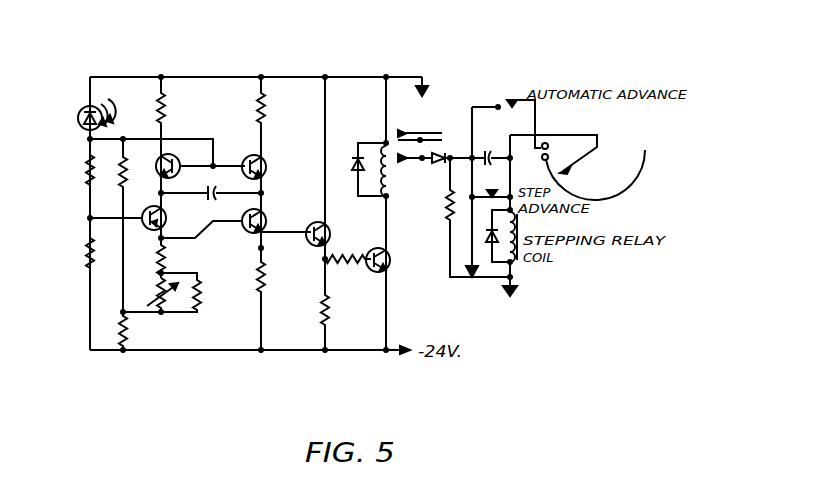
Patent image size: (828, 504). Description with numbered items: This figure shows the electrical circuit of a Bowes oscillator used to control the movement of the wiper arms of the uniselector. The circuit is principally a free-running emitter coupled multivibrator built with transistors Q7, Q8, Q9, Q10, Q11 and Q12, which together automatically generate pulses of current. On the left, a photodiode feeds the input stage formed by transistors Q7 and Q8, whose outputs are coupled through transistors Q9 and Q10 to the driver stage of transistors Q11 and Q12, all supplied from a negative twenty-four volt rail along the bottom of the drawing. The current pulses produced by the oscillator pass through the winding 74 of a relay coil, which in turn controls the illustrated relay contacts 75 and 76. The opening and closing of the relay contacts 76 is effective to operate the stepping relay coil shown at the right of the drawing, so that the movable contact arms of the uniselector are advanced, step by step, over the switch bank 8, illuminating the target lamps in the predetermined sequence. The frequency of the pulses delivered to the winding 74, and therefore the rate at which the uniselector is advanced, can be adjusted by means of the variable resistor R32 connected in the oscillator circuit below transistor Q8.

The winding of relay coil 74 is at (388, 186).
The relay contact 75 is at (410, 133).
The relay contact 76 is at (421, 162).
The bank of stepping switch 8 is at (597, 165).
The transistor Q7 is at (179, 164).
The transistor Q8 is at (164, 220).
The transistor Q9 is at (266, 162).
The transistor Q10 is at (269, 219).
The transistor Q11 is at (332, 234).
The transistor Q12 is at (392, 260).
The variable resistor R32 is at (162, 292).